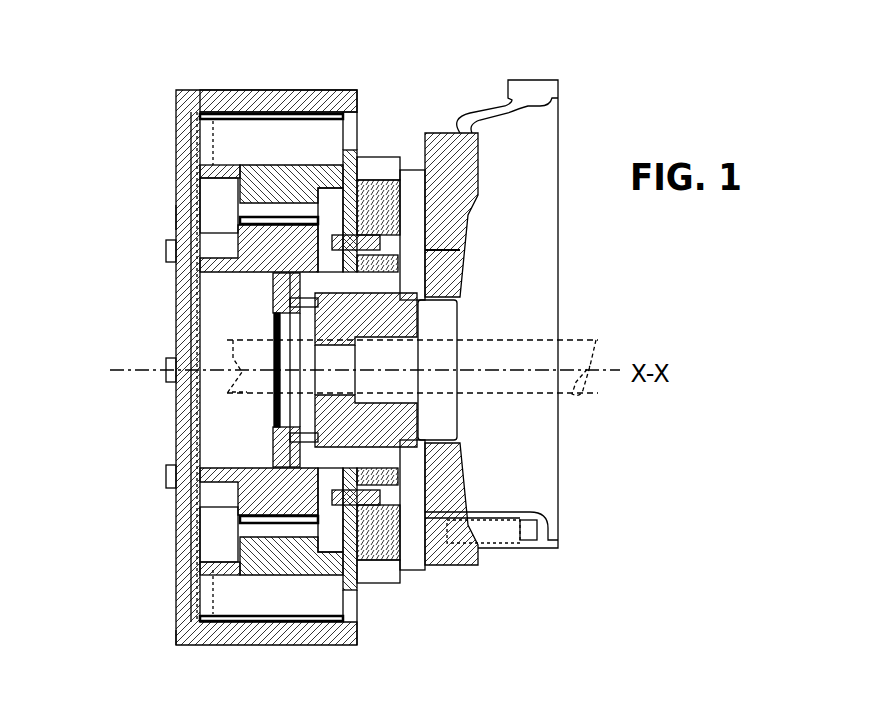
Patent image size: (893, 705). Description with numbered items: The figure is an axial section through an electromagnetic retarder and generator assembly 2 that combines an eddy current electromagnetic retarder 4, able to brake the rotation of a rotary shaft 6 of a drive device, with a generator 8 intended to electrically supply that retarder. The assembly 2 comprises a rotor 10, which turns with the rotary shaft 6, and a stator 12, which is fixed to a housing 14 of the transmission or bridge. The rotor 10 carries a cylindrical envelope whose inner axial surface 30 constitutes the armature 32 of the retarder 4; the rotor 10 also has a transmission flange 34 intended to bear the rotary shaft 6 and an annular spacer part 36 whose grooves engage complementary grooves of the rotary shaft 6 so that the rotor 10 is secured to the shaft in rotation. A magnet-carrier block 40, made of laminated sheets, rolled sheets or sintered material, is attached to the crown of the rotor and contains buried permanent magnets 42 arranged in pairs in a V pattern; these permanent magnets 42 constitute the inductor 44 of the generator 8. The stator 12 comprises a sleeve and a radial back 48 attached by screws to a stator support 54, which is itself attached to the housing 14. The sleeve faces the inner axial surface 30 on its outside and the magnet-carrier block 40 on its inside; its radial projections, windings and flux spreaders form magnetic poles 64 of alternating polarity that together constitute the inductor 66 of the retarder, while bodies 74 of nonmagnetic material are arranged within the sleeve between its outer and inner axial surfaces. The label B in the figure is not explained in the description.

The electromagnetic retarder and generator assembly 2 is at (150, 652).
The eddy current electromagnetic retarder 4 is at (360, 84).
The rotary shaft 6 is at (568, 382).
The generator 8 is at (176, 216).
The rotor 10 is at (200, 90).
The stator 12 is at (210, 180).
The housing 14 is at (507, 548).
The inner axial surface 30 is at (278, 60).
The armature 32 is at (304, 106).
The transmission flange 34 is at (420, 330).
The spacer part 36 is at (275, 428).
The magnet-carrier block 40 is at (187, 370).
The permanent magnets 42 is at (389, 663).
The inductor of the generator 44 is at (250, 240).
The radial back 48 is at (350, 185).
The stator support 54 is at (387, 177).
The magnetic poles 64 is at (200, 366).
The inductor of the retarder 66 is at (224, 147).
The bodies of nonmagnetic material 74 is at (253, 211).
The piston B is at (258, 192).